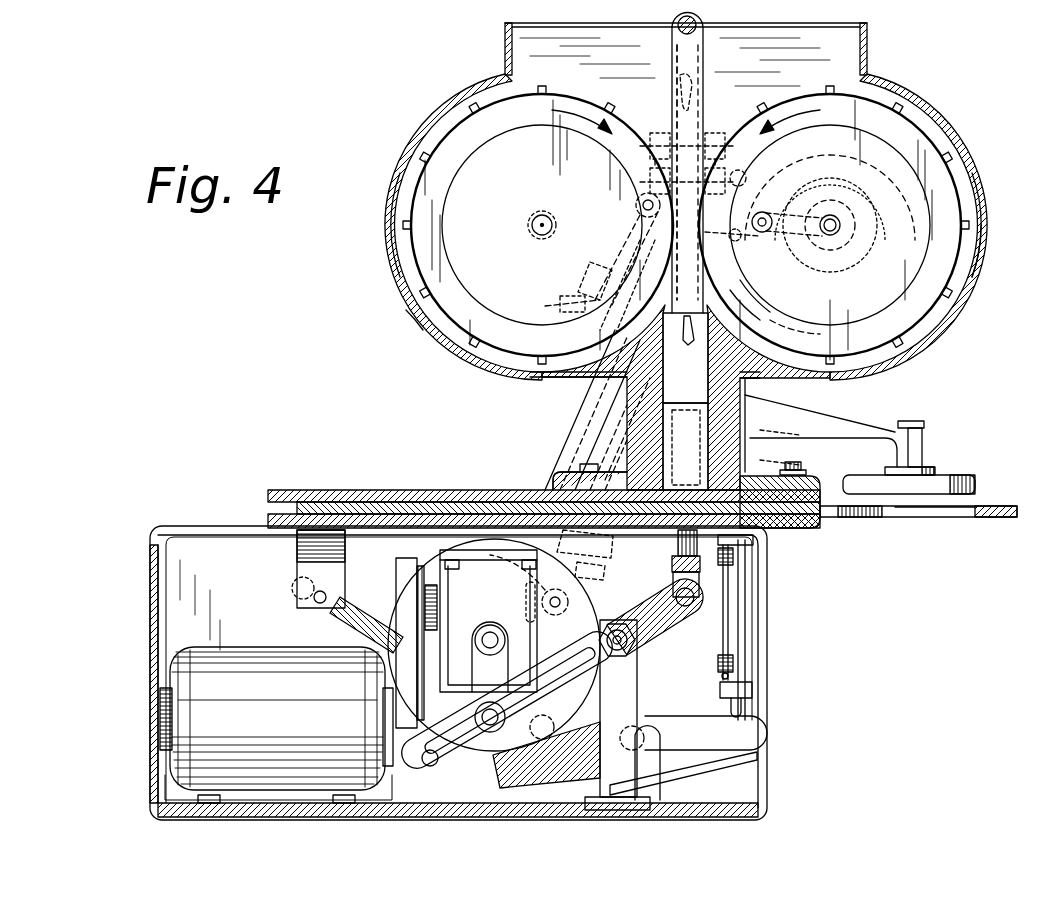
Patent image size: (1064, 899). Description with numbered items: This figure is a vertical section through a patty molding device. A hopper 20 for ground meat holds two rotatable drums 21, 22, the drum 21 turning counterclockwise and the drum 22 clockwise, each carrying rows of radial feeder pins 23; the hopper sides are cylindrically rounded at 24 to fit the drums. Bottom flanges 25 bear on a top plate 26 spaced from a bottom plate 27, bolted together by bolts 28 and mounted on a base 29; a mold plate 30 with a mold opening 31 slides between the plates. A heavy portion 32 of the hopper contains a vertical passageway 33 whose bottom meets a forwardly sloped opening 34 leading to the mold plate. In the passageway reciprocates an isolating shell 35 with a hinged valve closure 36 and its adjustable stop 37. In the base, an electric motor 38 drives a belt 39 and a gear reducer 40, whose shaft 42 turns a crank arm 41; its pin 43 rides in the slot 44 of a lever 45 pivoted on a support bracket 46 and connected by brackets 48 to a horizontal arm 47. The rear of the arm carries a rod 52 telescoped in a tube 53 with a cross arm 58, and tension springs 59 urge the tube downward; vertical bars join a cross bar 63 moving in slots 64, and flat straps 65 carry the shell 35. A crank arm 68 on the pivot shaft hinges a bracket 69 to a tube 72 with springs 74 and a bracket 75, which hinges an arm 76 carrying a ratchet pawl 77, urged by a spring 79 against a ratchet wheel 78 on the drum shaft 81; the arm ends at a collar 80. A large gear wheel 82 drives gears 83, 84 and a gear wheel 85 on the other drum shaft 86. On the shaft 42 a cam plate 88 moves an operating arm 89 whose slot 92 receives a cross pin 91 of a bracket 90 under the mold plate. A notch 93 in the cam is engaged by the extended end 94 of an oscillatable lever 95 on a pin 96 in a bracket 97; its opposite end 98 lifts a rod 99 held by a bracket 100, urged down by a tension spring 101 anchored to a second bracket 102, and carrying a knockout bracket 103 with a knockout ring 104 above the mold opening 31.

The hopper 20 is at (869, 58).
The drum 21 is at (833, 117).
The drum 22 is at (535, 118).
The feeder pins 23 is at (612, 104).
The cylindrically rounded sides 24 is at (390, 205).
The bottom flanges 25 is at (820, 486).
The top plate 26 is at (335, 490).
The bottom plate 27 is at (268, 518).
The bolts 28 is at (792, 470).
The base 29 is at (767, 578).
The mold plate 30 is at (1002, 507).
The mold opening 31 is at (943, 510).
The heavy portion 32 is at (747, 395).
The vertical passageway 33 is at (685, 358).
The forwardly sloped opening 34 is at (832, 515).
The isolating means (shell) 35 is at (686, 346).
The hinged valve closure 36 is at (740, 300).
The adjustable stop 37 is at (762, 312).
The electric motor 38 is at (285, 716).
The belt 39 is at (404, 592).
The gear reducer 40 is at (488, 621).
The crank arm 41 is at (510, 668).
The gear reducer shaft 42 is at (490, 626).
The pin 43 is at (480, 740).
The longitudinal slot 44 is at (432, 770).
The lever 45 is at (639, 708).
The support bracket 46 is at (628, 720).
The arm 47 is at (673, 564).
The brackets 48 is at (651, 617).
The rod 52 is at (678, 545).
The tube 53 is at (820, 413).
The cross arm 58 is at (705, 162).
The tension springs 59 is at (638, 186).
The horizontal cross bar 63 is at (697, 28).
The vertical parallel slots 64 is at (673, 50).
The flat metal straps 65 is at (700, 95).
The crank arm 68 is at (555, 585).
The metal bracket 69 is at (520, 598).
The tube 72 is at (584, 292).
The tension springs 74 is at (560, 390).
The bracket 75 is at (640, 232).
The arm 76 is at (830, 193).
The ratchet pawl 77 is at (787, 240).
The ratchet wheel 78 is at (876, 192).
The spring 79 is at (732, 249).
The collar 80 is at (831, 239).
The drum shaft 81 is at (843, 230).
The gear wheel 82 is at (978, 248).
The gear wheel 83 is at (780, 333).
The gear wheel 84 is at (560, 306).
The gear wheel 85 is at (402, 294).
The drum shaft 86 is at (531, 230).
The circular cam plate 88 is at (572, 712).
The operating arm 89 is at (345, 622).
The bracket 90 is at (298, 568).
The cross pin 91 is at (315, 603).
The elongated slot 92 is at (292, 592).
The notch 93 is at (440, 690).
The extended end 94 is at (497, 770).
The oscillatable lever 95 is at (685, 752).
The pin 96 is at (642, 735).
The bracket 97 is at (652, 800).
The opposite end 98 is at (757, 727).
The rod 99 is at (747, 625).
The bracket 100 is at (752, 690).
The tension spring 101 is at (718, 665).
The second bracket 102 is at (755, 544).
The knockout bracket 103 is at (845, 430).
The knockout ring 104 is at (958, 478).